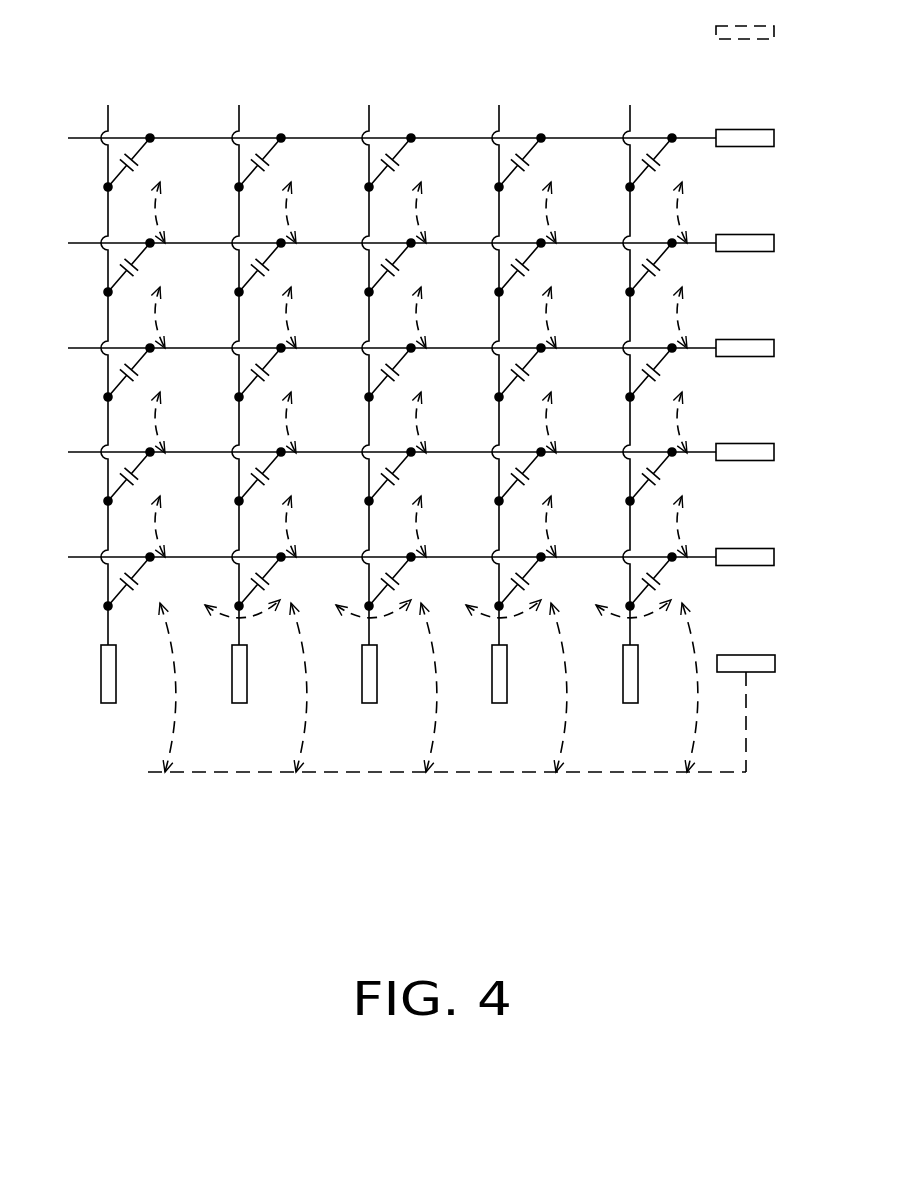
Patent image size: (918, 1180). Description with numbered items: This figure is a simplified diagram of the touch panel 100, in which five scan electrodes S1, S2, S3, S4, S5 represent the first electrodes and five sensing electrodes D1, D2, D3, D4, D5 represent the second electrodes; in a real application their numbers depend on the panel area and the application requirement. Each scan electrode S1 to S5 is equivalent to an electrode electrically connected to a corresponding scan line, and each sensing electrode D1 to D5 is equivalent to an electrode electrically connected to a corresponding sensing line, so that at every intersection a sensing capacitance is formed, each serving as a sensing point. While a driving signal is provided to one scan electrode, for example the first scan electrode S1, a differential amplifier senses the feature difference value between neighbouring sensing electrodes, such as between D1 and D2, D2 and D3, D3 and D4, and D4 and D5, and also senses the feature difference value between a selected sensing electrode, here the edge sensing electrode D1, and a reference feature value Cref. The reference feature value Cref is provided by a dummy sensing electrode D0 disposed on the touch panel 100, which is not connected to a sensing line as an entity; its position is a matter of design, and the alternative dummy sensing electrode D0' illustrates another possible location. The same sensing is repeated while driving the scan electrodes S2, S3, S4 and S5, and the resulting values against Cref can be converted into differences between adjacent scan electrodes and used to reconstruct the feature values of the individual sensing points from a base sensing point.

The touch panel 100 is at (108, 788).
The dummy sensing electrode D0' is at (787, 25).
The dummy sensing electrode D0 is at (785, 702).
The sensing electrode D1 is at (774, 557).
The sensing electrode D2 is at (774, 452).
The sensing electrode D3 is at (774, 348).
The sensing electrode D4 is at (774, 243).
The sensing electrode D5 is at (774, 138).
The scan electrode S1 is at (110, 703).
The scan electrode S2 is at (241, 703).
The scan electrode S3 is at (371, 703).
The scan electrode S4 is at (501, 703).
The scan electrode S5 is at (632, 703).
The reference feature value Cref is at (487, 772).